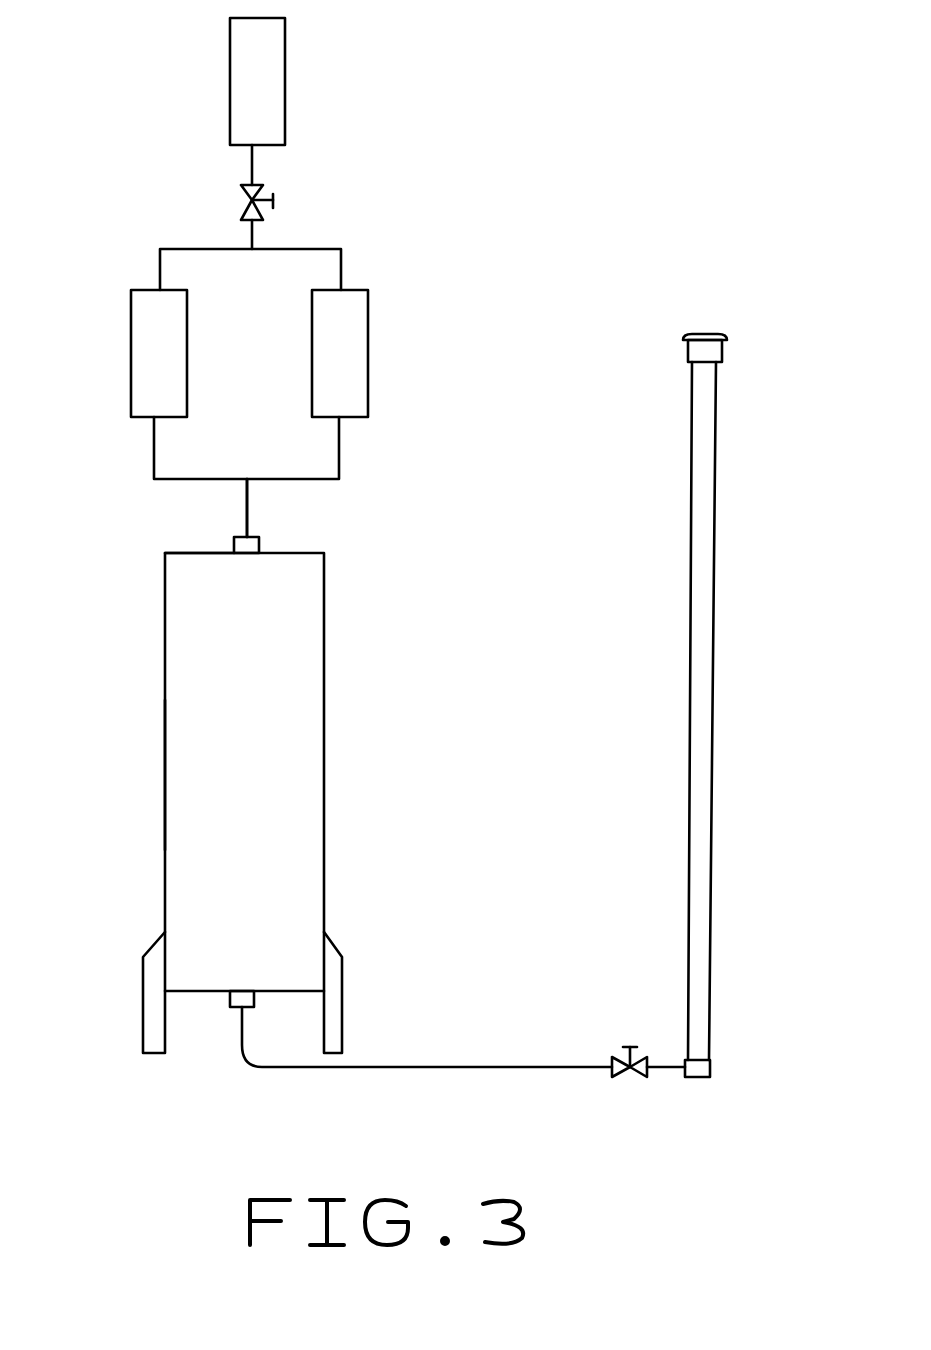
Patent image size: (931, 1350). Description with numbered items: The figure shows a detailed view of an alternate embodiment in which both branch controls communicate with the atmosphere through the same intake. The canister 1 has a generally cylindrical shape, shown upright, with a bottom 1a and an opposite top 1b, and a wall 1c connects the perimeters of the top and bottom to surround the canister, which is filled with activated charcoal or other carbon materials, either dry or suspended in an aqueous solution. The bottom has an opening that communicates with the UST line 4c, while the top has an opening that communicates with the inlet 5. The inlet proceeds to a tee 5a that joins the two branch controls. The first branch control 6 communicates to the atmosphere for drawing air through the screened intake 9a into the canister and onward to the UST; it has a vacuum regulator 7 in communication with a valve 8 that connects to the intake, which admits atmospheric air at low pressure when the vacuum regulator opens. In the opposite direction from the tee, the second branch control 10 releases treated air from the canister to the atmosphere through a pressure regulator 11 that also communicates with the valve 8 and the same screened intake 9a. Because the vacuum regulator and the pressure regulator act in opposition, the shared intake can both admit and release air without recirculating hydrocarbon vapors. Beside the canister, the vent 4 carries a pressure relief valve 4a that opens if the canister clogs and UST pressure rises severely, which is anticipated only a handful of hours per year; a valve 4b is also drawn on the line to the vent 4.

The canister 1 is at (362, 792).
The bottom 1a is at (205, 992).
The top 1b is at (197, 553).
The wall 1c is at (165, 768).
The vent 4 is at (712, 720).
The pressure relief valve 4a is at (722, 350).
The standpipe valve 4b is at (632, 1047).
The UST line 4c is at (497, 1067).
The inlet 5 is at (247, 520).
The tee 5a is at (247, 478).
The first branch control 6 is at (372, 255).
The vacuum regulator 7 is at (368, 355).
The valve 8 is at (230, 202).
The screened intake 9a is at (230, 88).
The second branch control 10 is at (127, 241).
The pressure regulator 11 is at (131, 323).